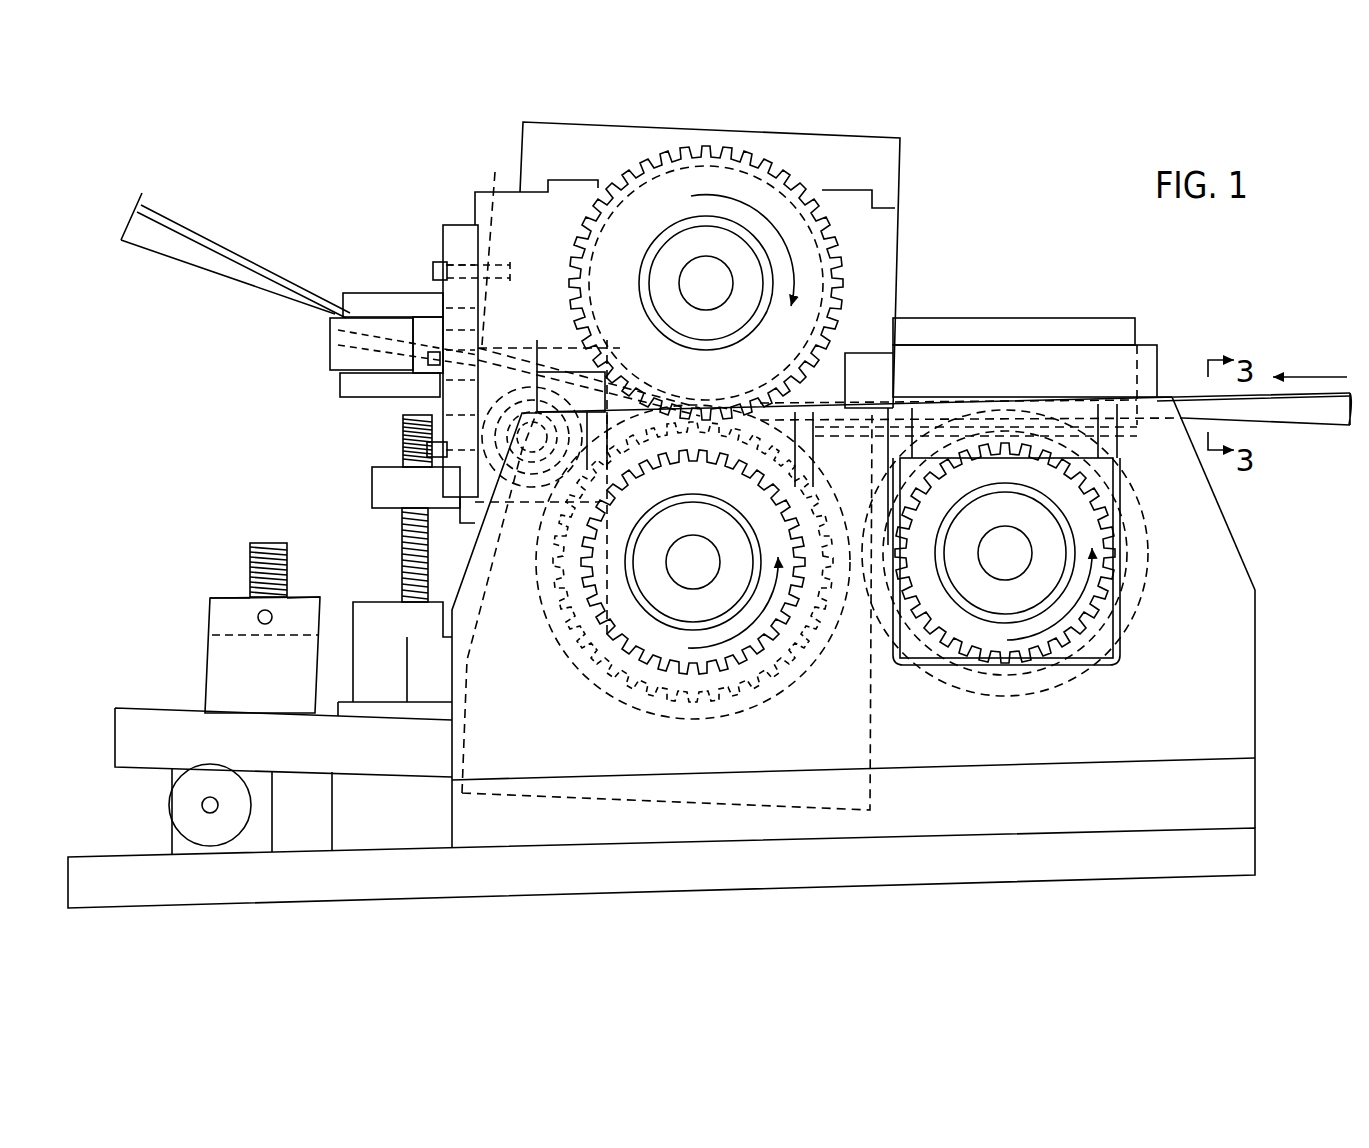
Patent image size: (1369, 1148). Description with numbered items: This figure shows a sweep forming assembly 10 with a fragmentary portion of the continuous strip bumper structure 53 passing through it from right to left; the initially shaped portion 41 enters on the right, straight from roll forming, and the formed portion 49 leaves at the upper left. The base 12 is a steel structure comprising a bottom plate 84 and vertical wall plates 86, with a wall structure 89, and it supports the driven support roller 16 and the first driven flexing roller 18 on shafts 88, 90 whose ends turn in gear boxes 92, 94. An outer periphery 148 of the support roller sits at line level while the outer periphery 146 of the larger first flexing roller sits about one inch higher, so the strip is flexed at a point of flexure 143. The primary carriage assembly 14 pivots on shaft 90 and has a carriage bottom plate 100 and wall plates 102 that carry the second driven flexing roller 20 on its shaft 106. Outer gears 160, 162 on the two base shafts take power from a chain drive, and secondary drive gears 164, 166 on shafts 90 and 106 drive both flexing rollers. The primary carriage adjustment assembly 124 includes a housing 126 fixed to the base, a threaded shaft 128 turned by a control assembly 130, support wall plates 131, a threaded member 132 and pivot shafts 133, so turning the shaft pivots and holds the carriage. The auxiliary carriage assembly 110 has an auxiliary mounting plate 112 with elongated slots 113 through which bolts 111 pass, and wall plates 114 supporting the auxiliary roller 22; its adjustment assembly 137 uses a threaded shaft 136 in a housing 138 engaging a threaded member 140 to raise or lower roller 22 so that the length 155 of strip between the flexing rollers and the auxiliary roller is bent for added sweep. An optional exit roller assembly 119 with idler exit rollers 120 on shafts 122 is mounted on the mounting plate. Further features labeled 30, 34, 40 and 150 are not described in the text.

The sweep forming assembly 10 is at (956, 190).
The base 12 is at (1264, 787).
The primary carriage assembly 14 is at (787, 130).
The driven support roller 16 is at (1160, 571).
The first driven flexing roller 18 is at (549, 635).
The second driven flexing roller 20 is at (856, 278).
The auxiliary roller 22 is at (520, 483).
The strip 30 is at (1268, 407).
The strip guide 34 is at (1188, 393).
The strip end 40 is at (1333, 407).
The initially shaped portion 41 is at (1307, 407).
The formed portion 49 is at (200, 257).
The strip bumper structure 53 is at (270, 271).
The bottom plate 84 is at (1240, 845).
The wall plates 86 is at (1240, 665).
The shaft 88 is at (990, 567).
The wall structure 89 is at (1098, 360).
The shaft 90 is at (678, 576).
The gear box 92 is at (1113, 457).
The gear box 94 is at (793, 677).
The carriage bottom plate 100 is at (137, 720).
The wall plates 102 is at (875, 298).
The shaft 106 is at (688, 297).
The auxiliary carriage assembly 110 is at (445, 240).
The bolts 111 is at (433, 270).
The auxiliary mounting plate 112 is at (457, 225).
The elongated slots 113 is at (495, 243).
The wall plates 114 is at (542, 367).
The exit roller assembly 119 is at (330, 343).
The exit rollers 120 is at (335, 350).
The shafts 122 is at (362, 380).
The primary carriage adjustment assembly 124 is at (207, 622).
The housing 126 is at (322, 816).
The threaded shaft 128 is at (273, 543).
The control assembly 130 is at (183, 810).
The support wall plates 131 is at (227, 660).
The threaded member 132 is at (308, 597).
The pivot shafts 133 is at (268, 624).
The threaded shaft 136 is at (402, 528).
The adjustment assembly 137 is at (350, 465).
The housing 138 is at (385, 690).
The threaded member 140 is at (380, 483).
The point of flexure 143 is at (736, 569).
The outer periphery 146 is at (712, 383).
The outer periphery 148 is at (1003, 400).
The upper gear teeth 150 is at (808, 178).
The length 155 is at (567, 367).
The outer gear 160 is at (1013, 648).
The outer gear 162 is at (713, 653).
The secondary drive gear 164 is at (637, 670).
The secondary drive gear 166 is at (818, 245).